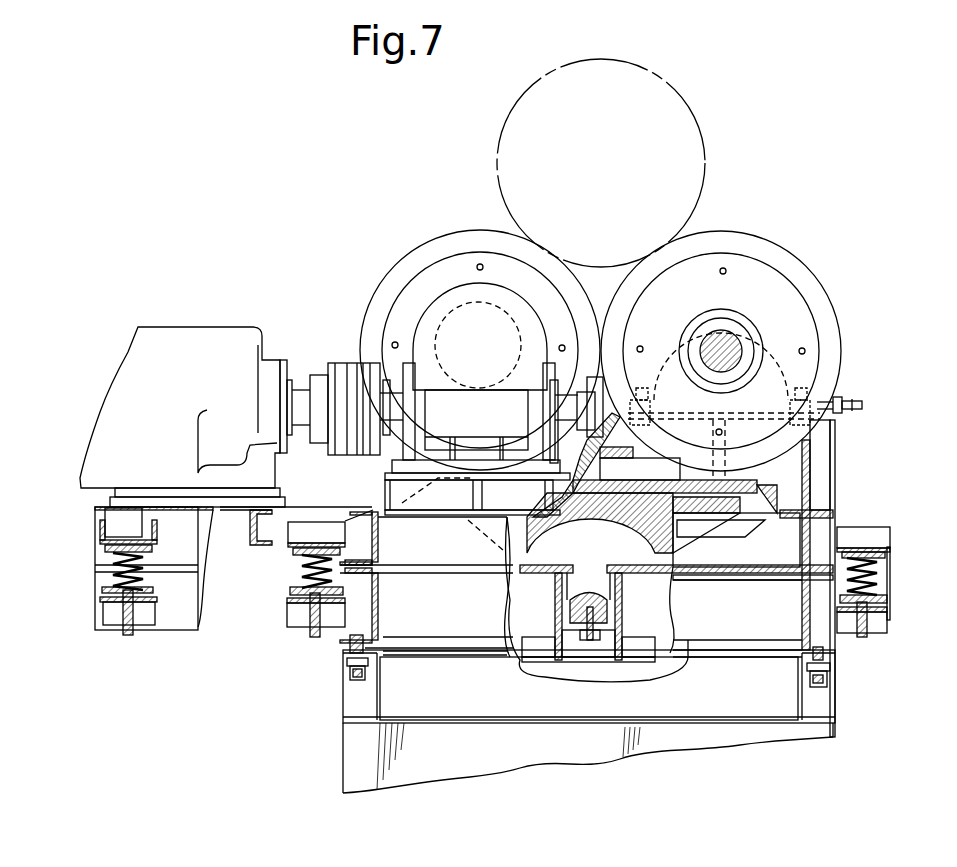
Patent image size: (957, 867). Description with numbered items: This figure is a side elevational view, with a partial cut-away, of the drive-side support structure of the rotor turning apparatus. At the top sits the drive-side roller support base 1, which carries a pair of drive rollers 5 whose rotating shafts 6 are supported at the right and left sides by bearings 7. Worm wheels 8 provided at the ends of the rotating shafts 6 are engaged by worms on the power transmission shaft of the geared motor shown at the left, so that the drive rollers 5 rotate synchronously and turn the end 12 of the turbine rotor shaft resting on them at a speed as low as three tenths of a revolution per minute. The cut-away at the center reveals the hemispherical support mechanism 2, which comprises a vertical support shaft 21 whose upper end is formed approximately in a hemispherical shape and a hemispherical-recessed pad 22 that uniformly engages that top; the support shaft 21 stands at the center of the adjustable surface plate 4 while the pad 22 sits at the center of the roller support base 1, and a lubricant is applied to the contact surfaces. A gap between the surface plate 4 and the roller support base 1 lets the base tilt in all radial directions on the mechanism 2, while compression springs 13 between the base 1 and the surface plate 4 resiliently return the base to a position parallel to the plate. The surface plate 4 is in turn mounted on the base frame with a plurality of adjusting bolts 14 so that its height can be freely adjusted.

The drive-side roller support base 1 is at (875, 407).
The hemispherical support mechanism 2 is at (643, 552).
The adjustable surface plate 4 is at (610, 652).
The drive roller 5 is at (443, 248).
The rotating shaft 6 is at (710, 363).
The bearing 7 is at (672, 326).
The worm wheel 8 is at (512, 320).
The one end of the shaft of the turbine rotor 12 is at (708, 187).
The compression spring 13 is at (110, 558).
The adjusting bolt 14 is at (347, 677).
The vertical support shaft 21 is at (578, 590).
The hemispherical-recessed pad 22 is at (690, 486).